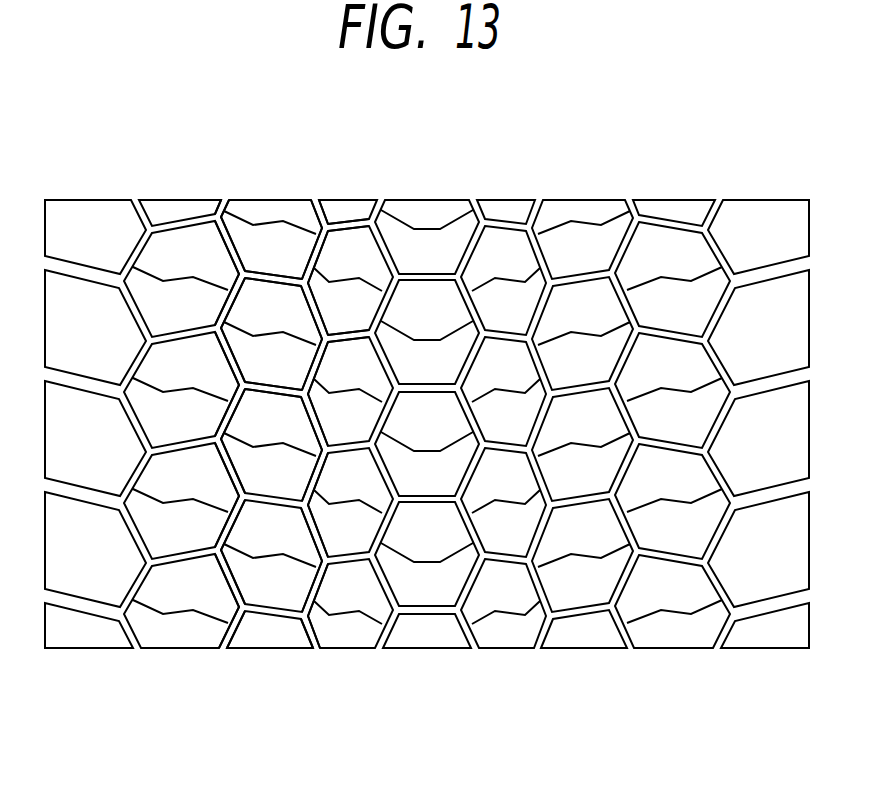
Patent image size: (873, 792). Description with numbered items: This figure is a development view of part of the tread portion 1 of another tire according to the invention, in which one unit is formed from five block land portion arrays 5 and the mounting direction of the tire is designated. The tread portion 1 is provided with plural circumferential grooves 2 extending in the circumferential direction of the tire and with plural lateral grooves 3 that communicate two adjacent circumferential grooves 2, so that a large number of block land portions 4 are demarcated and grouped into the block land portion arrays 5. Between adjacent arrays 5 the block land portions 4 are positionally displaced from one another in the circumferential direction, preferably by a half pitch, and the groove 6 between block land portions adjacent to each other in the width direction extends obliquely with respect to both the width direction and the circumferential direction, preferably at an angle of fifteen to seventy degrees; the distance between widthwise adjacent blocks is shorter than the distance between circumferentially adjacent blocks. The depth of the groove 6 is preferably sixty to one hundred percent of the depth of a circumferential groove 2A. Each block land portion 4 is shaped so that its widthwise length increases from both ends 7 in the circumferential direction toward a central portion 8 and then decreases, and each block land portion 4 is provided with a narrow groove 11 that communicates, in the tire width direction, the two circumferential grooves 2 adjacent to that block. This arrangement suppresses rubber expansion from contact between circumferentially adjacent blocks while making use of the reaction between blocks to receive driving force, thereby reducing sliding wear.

The tread portion 1 is at (549, 184).
The circumferential groove 2A is at (215, 214).
The circumferential groove 2 is at (316, 212).
The lateral groove 3 is at (244, 277).
The block land portion 4 is at (280, 325).
The block land portion array 5 is at (265, 653).
The groove between block land portions adjacent to each other in the width direction 6 is at (301, 402).
The end of the block land portion in the circumferential direction of the tire 7 is at (345, 226).
The central portion of the block land portion 8 is at (410, 274).
The narrow groove 11 is at (521, 266).